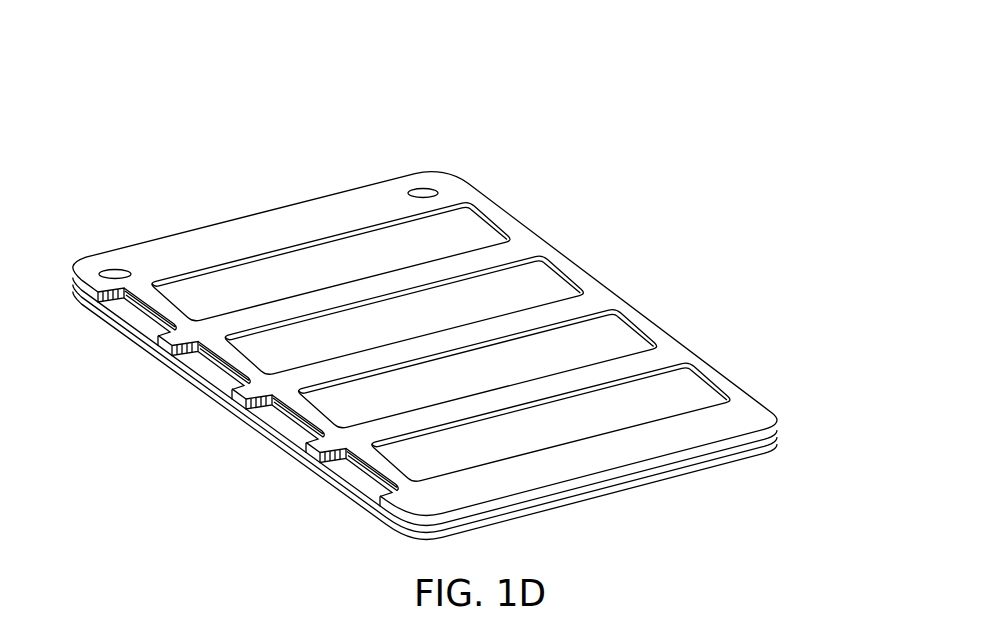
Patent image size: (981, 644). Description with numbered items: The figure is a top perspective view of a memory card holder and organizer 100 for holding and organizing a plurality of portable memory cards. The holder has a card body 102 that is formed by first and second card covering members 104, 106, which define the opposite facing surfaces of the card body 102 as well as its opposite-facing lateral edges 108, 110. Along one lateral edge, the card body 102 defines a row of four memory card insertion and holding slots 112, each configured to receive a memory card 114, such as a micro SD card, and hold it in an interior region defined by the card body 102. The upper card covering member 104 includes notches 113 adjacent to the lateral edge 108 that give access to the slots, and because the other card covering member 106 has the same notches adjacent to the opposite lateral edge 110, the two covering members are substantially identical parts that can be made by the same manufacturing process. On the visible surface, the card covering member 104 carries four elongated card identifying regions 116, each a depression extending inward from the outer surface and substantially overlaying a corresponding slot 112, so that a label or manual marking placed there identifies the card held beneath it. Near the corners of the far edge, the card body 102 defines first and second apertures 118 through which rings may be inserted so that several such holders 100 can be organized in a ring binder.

The memory card holder and organizer 100 is at (170, 112).
The card body 102 is at (325, 212).
The first card covering member 104 is at (763, 422).
The second card covering member 106 is at (765, 462).
The lateral edge 108 is at (303, 458).
The lateral edge 110 is at (620, 298).
The memory card insertion and holding slot 112 is at (125, 302).
The notch 113 is at (180, 296).
The memory card 114 is at (162, 323).
The card identifying region 116 is at (463, 232).
The aperture 118 is at (112, 266).